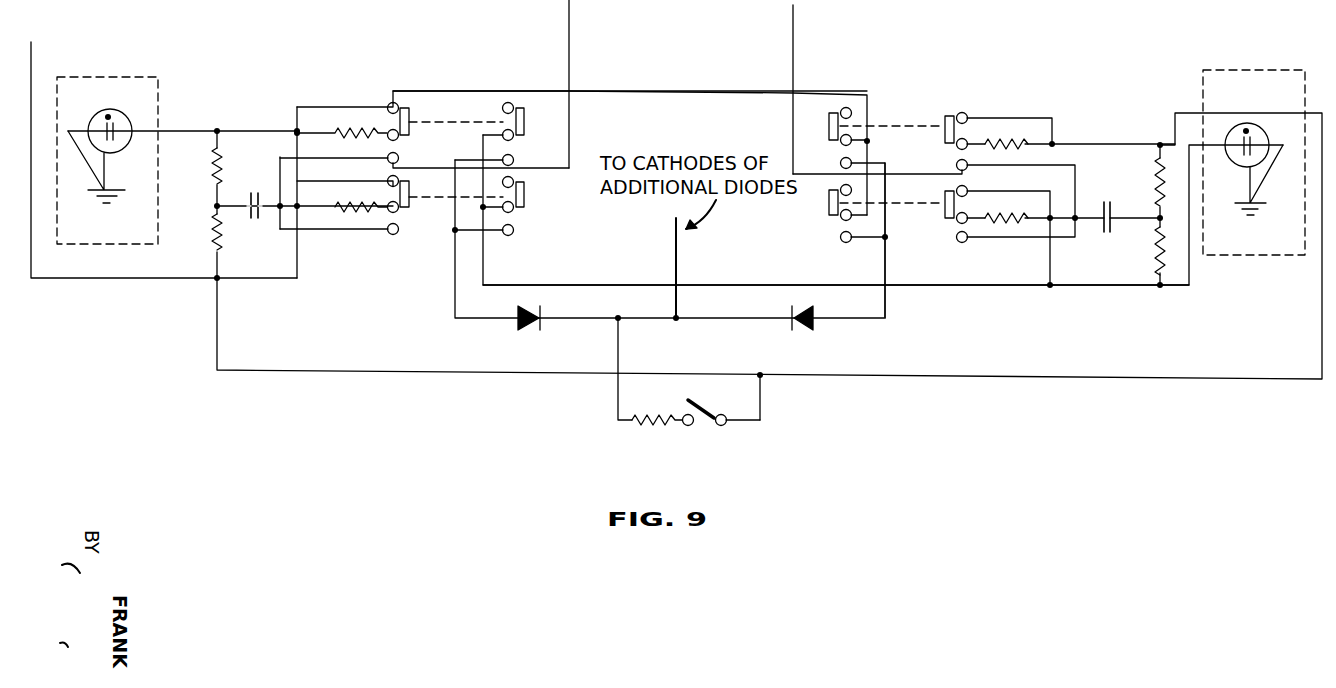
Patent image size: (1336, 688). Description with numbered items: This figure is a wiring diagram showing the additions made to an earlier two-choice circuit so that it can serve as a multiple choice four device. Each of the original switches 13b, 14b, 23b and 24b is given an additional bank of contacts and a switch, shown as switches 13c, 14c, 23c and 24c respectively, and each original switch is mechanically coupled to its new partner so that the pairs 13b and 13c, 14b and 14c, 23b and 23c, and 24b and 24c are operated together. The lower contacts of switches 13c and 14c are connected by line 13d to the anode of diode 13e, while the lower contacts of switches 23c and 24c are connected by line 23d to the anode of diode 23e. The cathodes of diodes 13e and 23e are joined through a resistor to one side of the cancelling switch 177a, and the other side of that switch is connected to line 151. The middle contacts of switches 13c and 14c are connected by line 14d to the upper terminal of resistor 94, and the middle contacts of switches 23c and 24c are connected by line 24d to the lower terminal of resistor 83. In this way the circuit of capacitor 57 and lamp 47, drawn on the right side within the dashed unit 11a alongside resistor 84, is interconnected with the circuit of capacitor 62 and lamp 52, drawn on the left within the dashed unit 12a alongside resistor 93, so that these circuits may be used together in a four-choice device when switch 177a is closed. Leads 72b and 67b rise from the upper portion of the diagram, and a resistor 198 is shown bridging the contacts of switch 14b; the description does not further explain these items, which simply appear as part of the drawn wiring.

The lamp 52 is at (135, 97).
The resistor 94 is at (212, 170).
The capacitor 62 is at (255, 192).
The resistor 93 is at (212, 237).
The lamp unit 12a is at (105, 247).
The switch 24b is at (412, 122).
The switch 24c is at (525, 127).
The switch 23b is at (413, 205).
The switch 23c is at (525, 200).
The line 23d is at (455, 268).
The line 24d is at (590, 284).
The lead 72b is at (569, 74).
The lead 67b is at (793, 86).
The line 14d is at (637, 95).
The switch 14c is at (828, 120).
The switch 13c is at (827, 201).
The switch 14b is at (945, 121).
The switch 13b is at (943, 219).
The resistor 198 is at (1005, 131).
The line 13d is at (884, 258).
The diode 23e is at (530, 327).
The diode 13e is at (810, 334).
The line 151 is at (668, 372).
The cancelling switch 177a is at (707, 425).
The capacitor 57 is at (1112, 192).
The resistor 84 is at (1157, 178).
The resistor 83 is at (1157, 250).
The lamp 47 is at (1253, 166).
The lamp unit 11a is at (1218, 258).